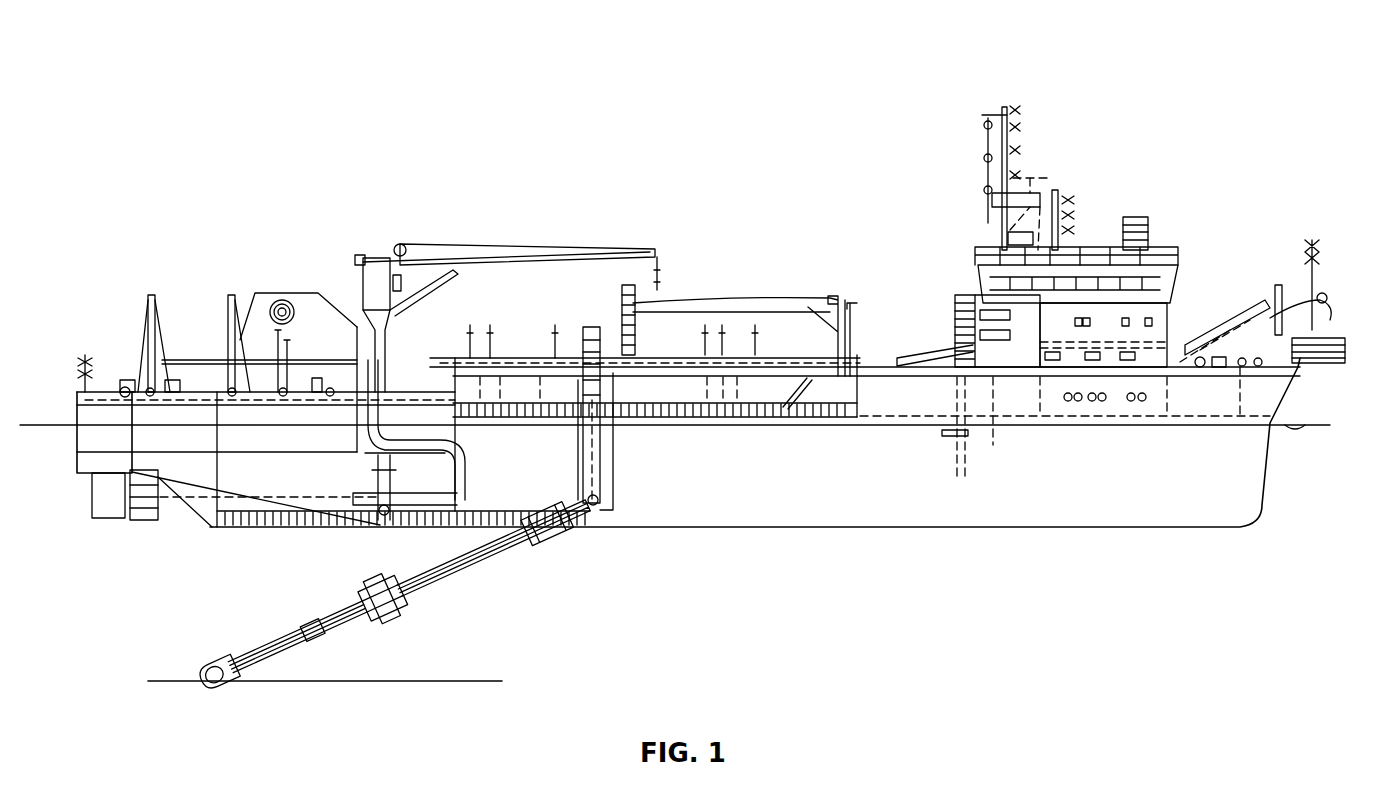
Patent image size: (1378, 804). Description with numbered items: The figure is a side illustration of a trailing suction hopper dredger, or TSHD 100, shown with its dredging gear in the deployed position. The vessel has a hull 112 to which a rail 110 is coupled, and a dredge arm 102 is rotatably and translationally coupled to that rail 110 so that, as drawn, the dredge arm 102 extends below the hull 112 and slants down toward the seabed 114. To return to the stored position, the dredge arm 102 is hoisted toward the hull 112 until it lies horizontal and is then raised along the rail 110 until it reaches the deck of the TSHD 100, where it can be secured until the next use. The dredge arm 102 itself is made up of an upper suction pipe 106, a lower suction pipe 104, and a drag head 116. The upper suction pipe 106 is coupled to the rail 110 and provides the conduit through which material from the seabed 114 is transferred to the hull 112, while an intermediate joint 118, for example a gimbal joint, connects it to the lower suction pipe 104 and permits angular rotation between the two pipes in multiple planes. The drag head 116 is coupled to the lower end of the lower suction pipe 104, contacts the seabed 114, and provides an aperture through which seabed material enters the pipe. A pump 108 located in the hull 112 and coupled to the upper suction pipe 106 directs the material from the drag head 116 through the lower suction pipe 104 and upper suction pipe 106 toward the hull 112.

The TSHD 100 is at (605, 74).
The dredge arm 102 is at (358, 574).
The lower suction pipe 104 is at (293, 633).
The upper suction pipe 106 is at (493, 555).
The pump 108 is at (388, 517).
The rail 110 is at (585, 413).
The hull 112 is at (866, 470).
The seabed 114 is at (278, 682).
The drag head 116 is at (227, 660).
The intermediate joint 118 is at (407, 597).